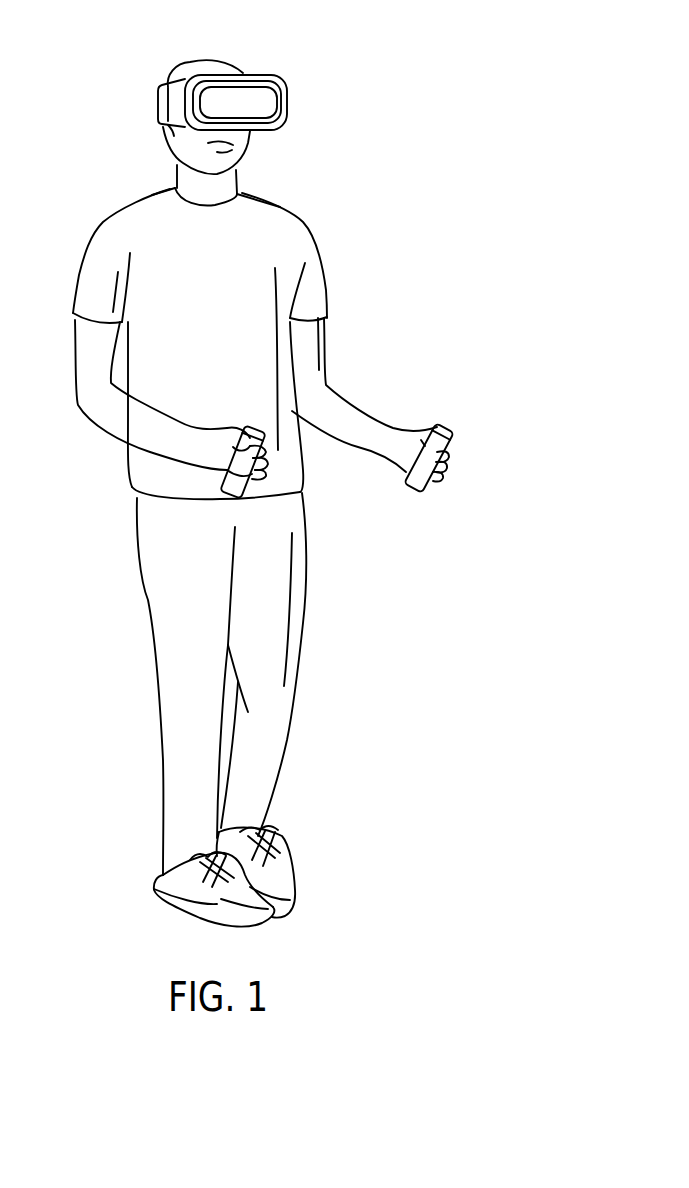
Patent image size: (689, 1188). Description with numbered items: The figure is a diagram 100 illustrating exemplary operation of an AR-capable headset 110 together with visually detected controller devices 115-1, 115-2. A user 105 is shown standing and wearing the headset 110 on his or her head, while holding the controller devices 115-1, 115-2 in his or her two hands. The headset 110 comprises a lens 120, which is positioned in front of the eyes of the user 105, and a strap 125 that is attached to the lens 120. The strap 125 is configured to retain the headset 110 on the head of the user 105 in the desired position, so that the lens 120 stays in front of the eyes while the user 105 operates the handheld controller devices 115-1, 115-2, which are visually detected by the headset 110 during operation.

The diagram 100 is at (415, 73).
The user 105 is at (322, 221).
The AR-capable headset 110 is at (292, 98).
The lens 120 is at (257, 108).
The strap 125 is at (166, 111).
The controller device 115-1 is at (450, 415).
The controller device 115-2 is at (258, 420).